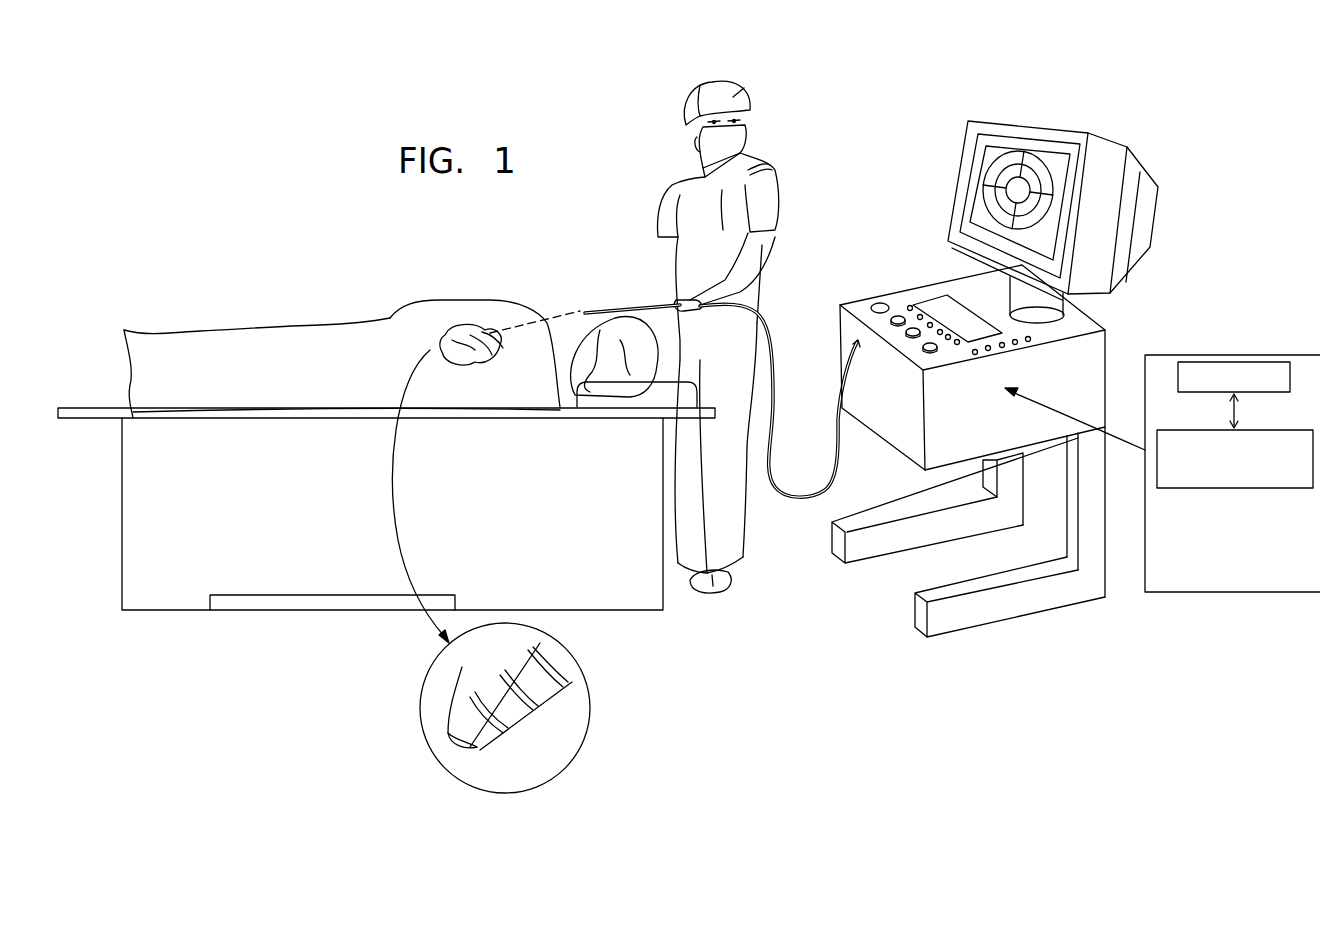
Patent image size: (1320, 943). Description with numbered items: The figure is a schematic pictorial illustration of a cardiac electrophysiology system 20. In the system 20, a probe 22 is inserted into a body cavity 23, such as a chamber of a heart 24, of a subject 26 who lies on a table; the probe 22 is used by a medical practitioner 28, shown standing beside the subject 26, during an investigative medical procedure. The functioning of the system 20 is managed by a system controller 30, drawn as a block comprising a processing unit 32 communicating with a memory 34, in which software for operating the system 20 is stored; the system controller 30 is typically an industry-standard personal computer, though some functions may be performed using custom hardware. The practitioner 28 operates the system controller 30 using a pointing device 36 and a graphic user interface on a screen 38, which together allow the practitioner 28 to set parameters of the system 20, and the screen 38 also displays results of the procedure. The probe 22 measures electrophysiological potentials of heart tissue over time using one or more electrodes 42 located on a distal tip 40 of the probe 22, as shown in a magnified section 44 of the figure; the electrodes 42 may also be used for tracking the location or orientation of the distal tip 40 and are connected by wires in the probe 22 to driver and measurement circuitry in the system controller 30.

The cardiac electrophysiology (EP) system 20 is at (1005, 67).
The probe 22 is at (776, 321).
The body cavity 23 is at (313, 192).
The heart 24 is at (462, 328).
The subject 26 is at (637, 372).
The medical practitioner 28 is at (686, 205).
The system controller 30 is at (1250, 356).
The processing unit 32 is at (1178, 430).
The memory 34 is at (1266, 362).
The pointing device 36 is at (884, 306).
The screen 38 is at (1000, 128).
The distal tip 40 is at (442, 337).
The electrodes 42 is at (517, 687).
The magnified section 44 is at (420, 700).